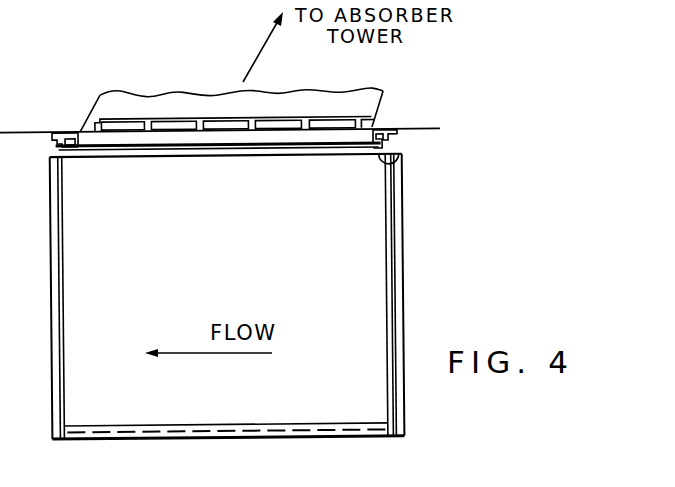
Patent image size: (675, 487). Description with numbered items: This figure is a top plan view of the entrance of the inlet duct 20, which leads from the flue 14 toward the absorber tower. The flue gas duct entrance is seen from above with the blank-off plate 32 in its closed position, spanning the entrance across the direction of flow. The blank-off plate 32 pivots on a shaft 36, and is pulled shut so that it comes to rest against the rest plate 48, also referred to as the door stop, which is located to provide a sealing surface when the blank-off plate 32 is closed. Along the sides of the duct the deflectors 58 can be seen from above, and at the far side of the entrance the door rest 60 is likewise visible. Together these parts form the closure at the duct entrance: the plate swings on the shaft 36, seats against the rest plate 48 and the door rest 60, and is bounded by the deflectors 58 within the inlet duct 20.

The flue 14 is at (232, 300).
The inlet duct 20 is at (343, 78).
The blank-off plate 32 is at (276, 140).
The shaft 36 is at (397, 159).
The rest plate 48 is at (314, 122).
The deflectors 58 is at (55, 296).
The door rest 60 is at (242, 430).